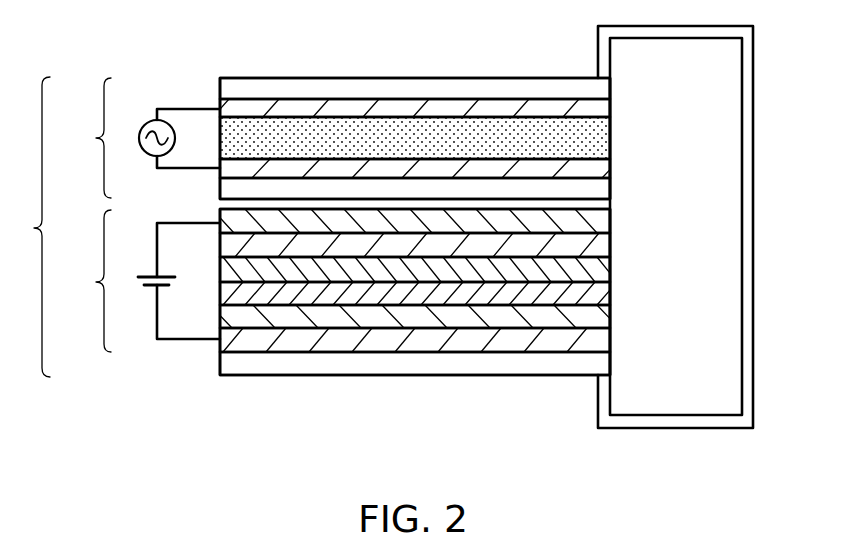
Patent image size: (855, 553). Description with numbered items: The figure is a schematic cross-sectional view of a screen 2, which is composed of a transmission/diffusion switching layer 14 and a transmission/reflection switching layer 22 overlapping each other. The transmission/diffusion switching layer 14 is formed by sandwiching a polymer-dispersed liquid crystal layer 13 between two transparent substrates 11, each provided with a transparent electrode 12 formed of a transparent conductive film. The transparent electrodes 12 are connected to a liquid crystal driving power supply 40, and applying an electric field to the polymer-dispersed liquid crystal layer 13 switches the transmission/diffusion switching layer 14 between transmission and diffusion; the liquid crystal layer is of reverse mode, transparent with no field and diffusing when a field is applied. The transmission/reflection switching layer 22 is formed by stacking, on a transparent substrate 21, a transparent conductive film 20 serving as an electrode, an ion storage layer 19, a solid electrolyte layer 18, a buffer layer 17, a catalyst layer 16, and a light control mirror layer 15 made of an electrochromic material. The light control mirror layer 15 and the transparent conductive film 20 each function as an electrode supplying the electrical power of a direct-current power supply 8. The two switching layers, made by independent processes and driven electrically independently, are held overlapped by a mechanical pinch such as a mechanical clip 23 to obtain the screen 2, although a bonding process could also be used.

The screen 2 is at (31, 227).
The direct-current power supply 8 is at (151, 273).
The transparent substrate 11 is at (604, 84).
The transparent electrode 12 is at (604, 105).
The polymer-dispersed liquid crystal layer 13 is at (604, 138).
The transmission/diffusion switching layer 14 is at (336, 138).
The light control mirror layer 15 is at (604, 219).
The catalyst layer 16 is at (604, 242).
The buffer layer 17 is at (604, 265).
The solid electrolyte layer 18 is at (604, 288).
The ion storage layer 19 is at (604, 312).
The transparent conductive film 20 is at (604, 337).
The transparent substrate 21 is at (604, 360).
The transmission/reflection switching layer 22 is at (336, 292).
The mechanical clip 23 is at (748, 166).
The liquid crystal driving power supply 40 is at (151, 118).